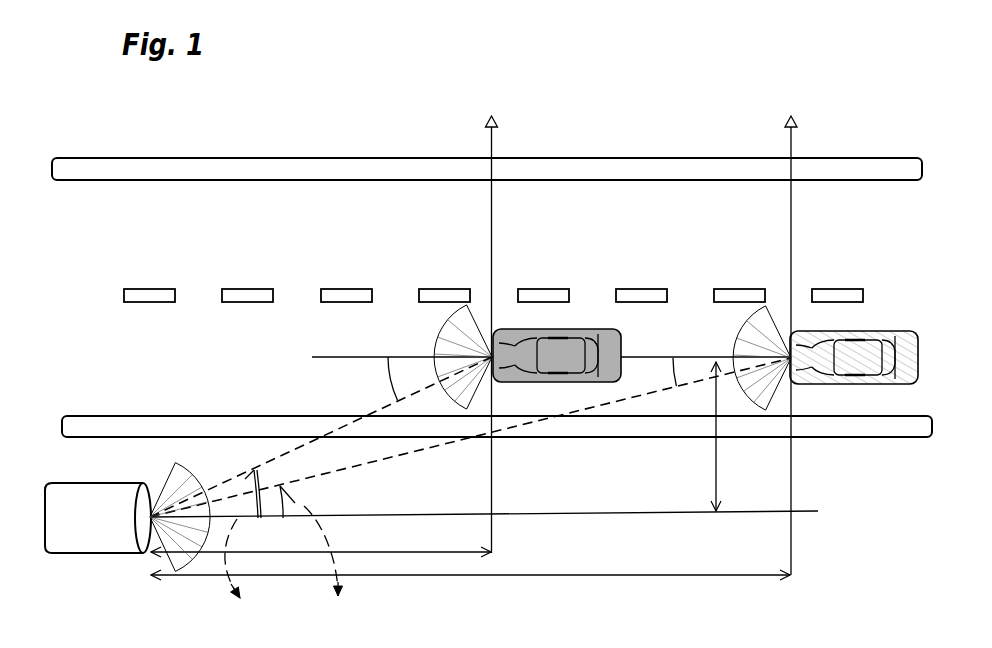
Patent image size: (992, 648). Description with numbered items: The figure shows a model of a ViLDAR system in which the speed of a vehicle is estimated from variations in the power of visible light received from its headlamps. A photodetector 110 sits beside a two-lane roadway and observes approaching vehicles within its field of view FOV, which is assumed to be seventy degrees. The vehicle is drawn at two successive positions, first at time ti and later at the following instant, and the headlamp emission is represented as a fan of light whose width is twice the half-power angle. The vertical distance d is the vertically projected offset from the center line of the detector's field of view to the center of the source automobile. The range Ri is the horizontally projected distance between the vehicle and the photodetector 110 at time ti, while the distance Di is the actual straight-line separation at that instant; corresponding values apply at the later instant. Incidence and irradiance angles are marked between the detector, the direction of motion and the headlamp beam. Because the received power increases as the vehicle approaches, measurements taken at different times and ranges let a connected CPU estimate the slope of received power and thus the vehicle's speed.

The photodetector 110 is at (70, 483).
The field of view FOV is at (180, 517).
The vertical distance d is at (725, 436).
The range at time ti Ri is at (470, 591).
The distance at time ti Di is at (470, 437).
The time instance ti is at (786, 345).